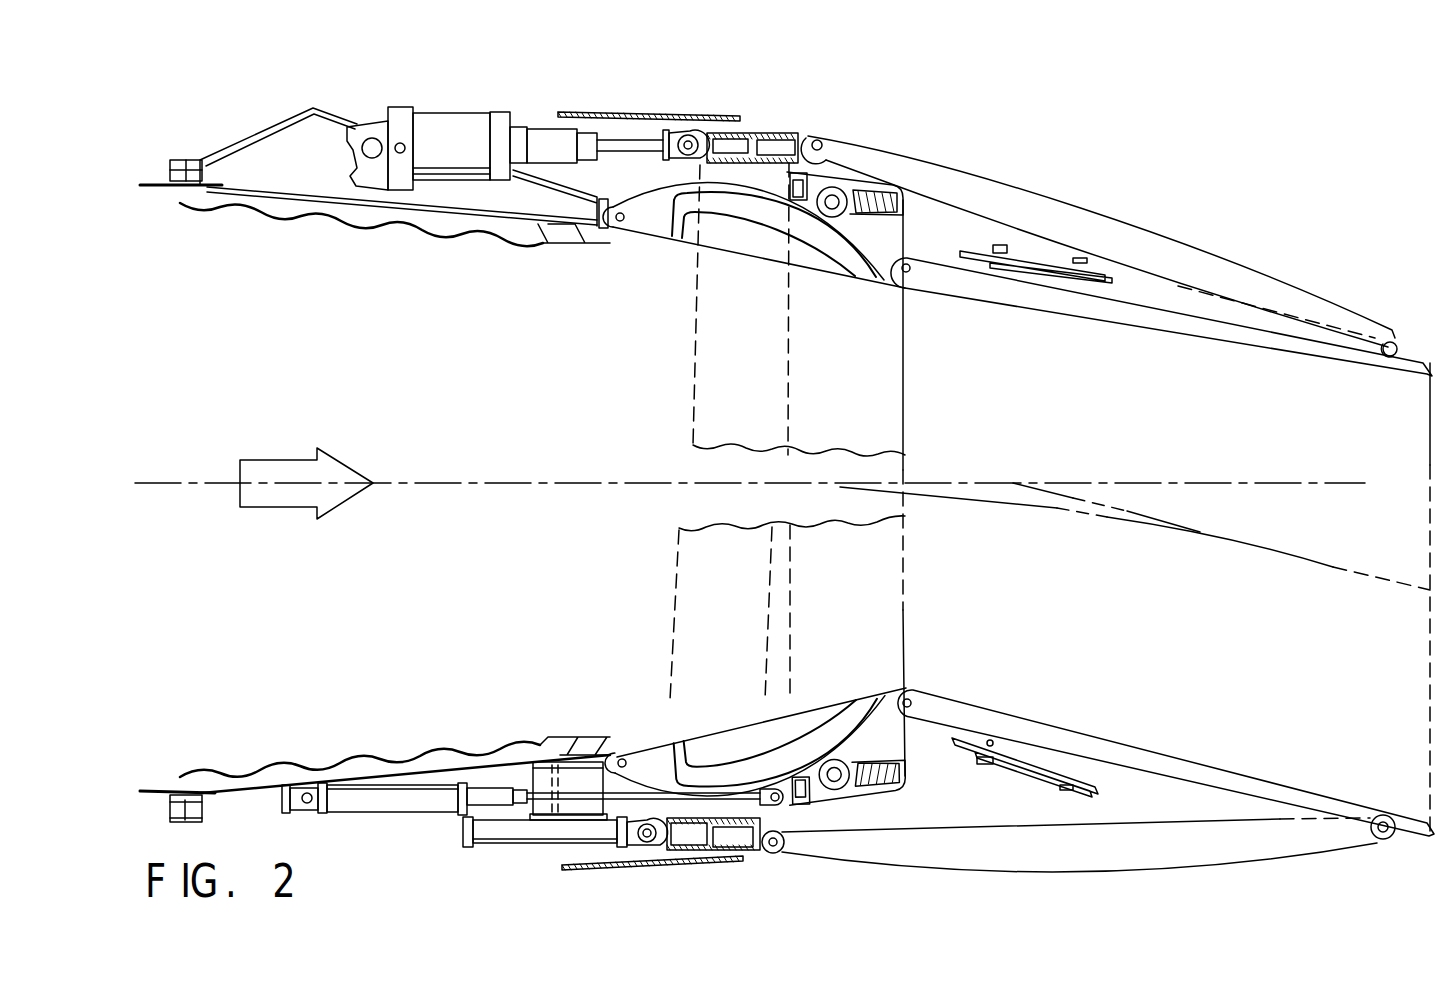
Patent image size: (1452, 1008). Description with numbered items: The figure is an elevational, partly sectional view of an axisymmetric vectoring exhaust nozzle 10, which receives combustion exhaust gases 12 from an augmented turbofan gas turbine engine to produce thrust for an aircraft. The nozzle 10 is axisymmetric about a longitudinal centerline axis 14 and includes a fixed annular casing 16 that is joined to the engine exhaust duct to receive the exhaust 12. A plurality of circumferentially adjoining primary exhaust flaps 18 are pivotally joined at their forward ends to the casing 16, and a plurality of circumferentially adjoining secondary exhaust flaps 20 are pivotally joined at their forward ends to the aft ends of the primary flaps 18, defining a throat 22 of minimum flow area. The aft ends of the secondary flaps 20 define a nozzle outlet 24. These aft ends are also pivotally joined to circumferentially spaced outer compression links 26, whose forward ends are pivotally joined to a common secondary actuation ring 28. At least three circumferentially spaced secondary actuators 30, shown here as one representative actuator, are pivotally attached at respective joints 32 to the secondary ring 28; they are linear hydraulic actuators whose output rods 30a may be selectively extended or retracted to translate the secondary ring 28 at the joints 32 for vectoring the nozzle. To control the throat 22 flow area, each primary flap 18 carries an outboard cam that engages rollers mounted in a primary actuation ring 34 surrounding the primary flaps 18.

The axisymmetric vectoring exhaust nozzle 10 is at (1268, 150).
The combustion exhaust gases 12 is at (277, 508).
The longitudinal centerline axis 14 is at (553, 481).
The annular casing 16 is at (147, 183).
The primary exhaust flaps 18 is at (650, 240).
The secondary exhaust flaps 20 is at (1270, 345).
The throat 22 is at (906, 425).
The nozzle outlet 24 is at (1428, 562).
The outer compression links 26 is at (1090, 207).
The secondary actuation ring 28 is at (772, 131).
The secondary actuators 30 is at (440, 113).
The output rods 30a is at (623, 133).
The joints 32 is at (701, 133).
The primary actuation ring 34 is at (905, 756).